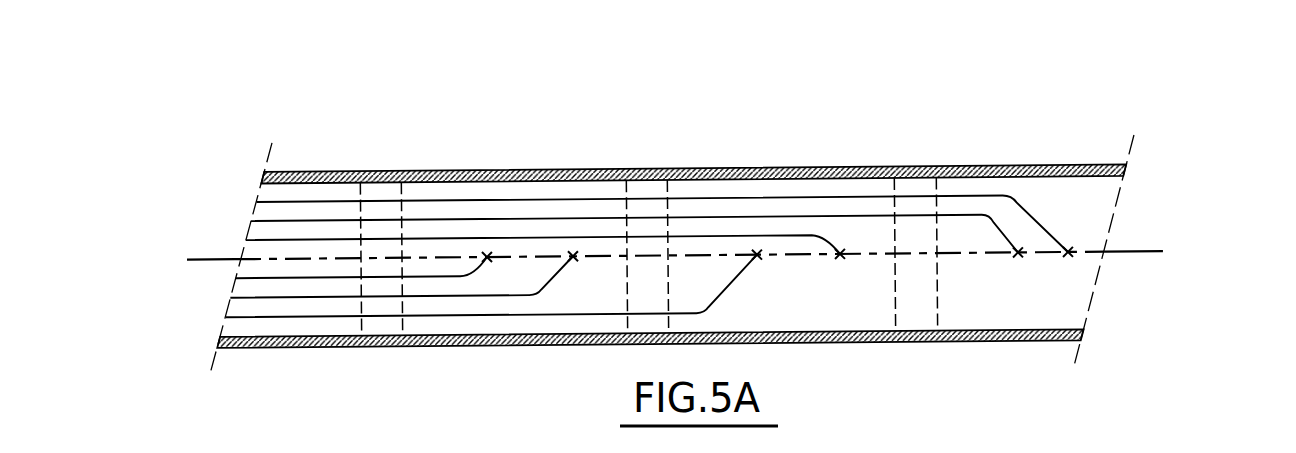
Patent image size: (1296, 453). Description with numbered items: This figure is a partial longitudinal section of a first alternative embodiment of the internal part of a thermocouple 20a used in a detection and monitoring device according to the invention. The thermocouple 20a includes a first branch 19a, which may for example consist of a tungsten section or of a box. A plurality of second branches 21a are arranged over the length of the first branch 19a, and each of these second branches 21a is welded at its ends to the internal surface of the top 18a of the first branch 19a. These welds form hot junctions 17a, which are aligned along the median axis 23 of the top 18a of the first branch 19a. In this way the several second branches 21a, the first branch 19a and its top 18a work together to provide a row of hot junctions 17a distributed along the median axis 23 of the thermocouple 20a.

The hot junctions 17a is at (1070, 262).
The top of the first branch 18a is at (1080, 203).
The first branch 19a is at (495, 168).
The thermocouple 20a is at (892, 122).
The second branches 21a is at (325, 201).
The median axis 23 is at (1143, 254).